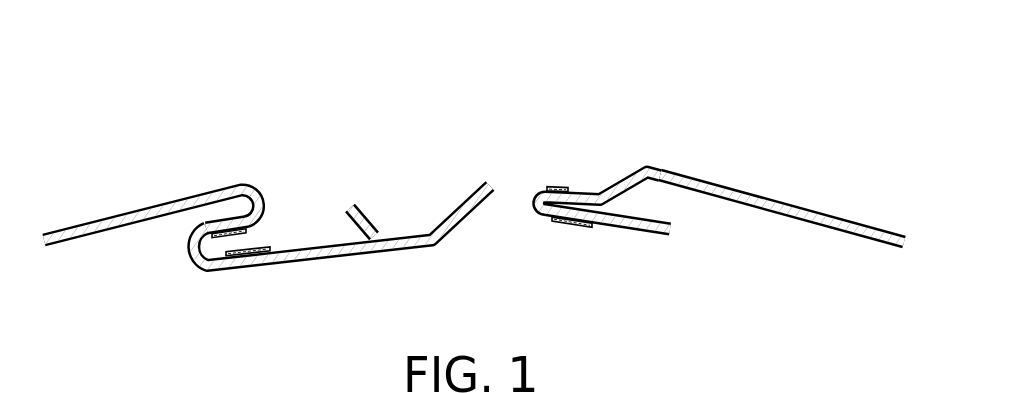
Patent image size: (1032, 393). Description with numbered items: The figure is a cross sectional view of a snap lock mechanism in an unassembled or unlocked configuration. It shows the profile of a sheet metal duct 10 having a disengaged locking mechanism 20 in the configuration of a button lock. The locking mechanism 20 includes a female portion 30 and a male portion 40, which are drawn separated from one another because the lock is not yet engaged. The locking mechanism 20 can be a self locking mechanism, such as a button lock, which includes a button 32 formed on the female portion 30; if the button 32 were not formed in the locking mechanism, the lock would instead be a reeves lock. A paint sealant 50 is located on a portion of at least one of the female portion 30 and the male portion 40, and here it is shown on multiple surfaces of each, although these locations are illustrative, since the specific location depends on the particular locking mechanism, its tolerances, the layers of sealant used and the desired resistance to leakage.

The sheet metal duct 10 is at (422, 68).
The locking mechanism 20 is at (138, 206).
The female portion 30 is at (253, 268).
The button 32 is at (367, 212).
The male portion 40 is at (590, 192).
The paint sealant 50 is at (266, 247).